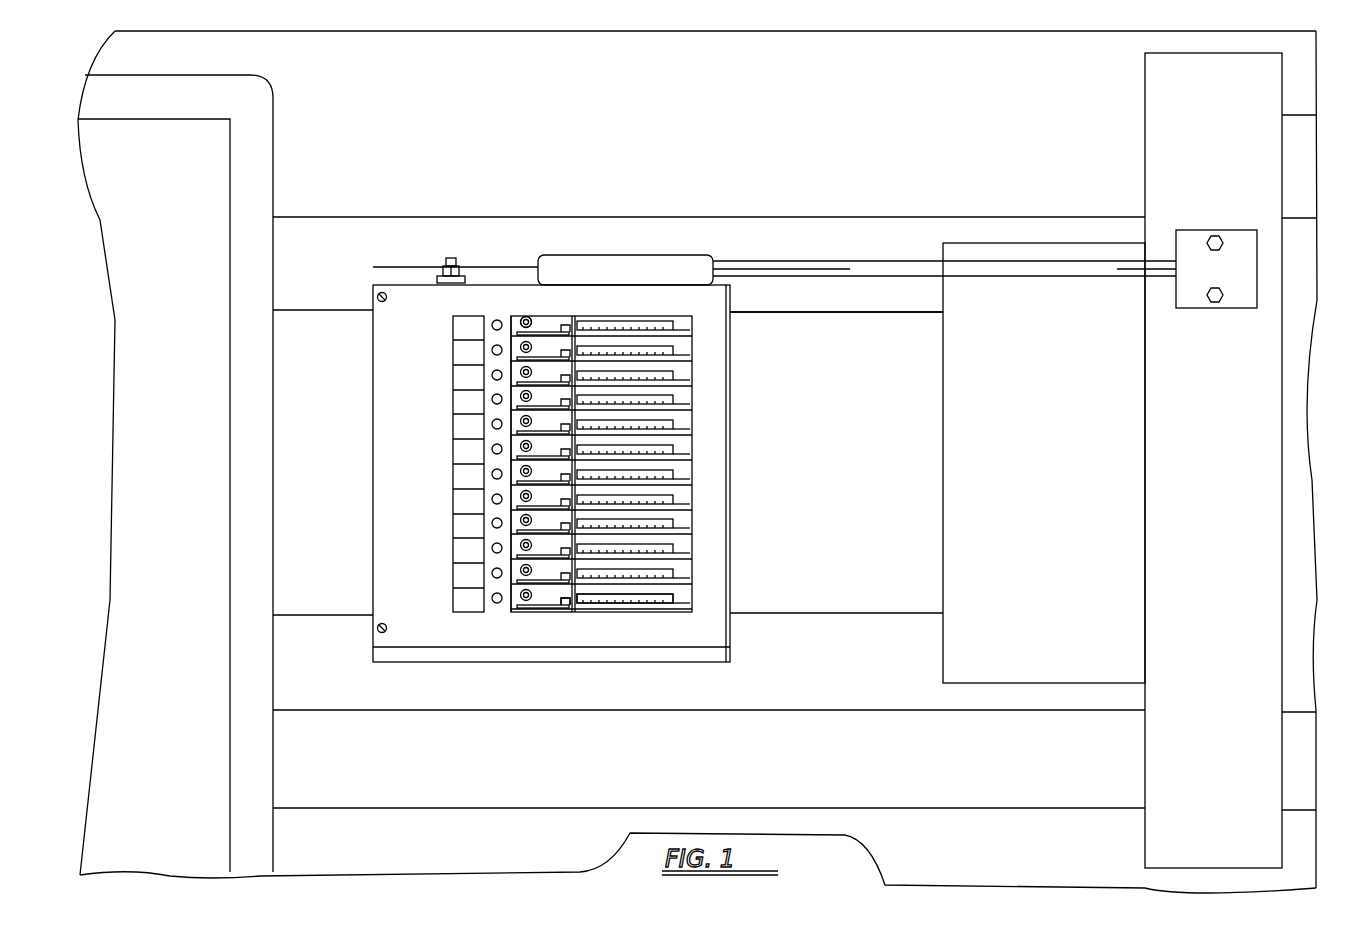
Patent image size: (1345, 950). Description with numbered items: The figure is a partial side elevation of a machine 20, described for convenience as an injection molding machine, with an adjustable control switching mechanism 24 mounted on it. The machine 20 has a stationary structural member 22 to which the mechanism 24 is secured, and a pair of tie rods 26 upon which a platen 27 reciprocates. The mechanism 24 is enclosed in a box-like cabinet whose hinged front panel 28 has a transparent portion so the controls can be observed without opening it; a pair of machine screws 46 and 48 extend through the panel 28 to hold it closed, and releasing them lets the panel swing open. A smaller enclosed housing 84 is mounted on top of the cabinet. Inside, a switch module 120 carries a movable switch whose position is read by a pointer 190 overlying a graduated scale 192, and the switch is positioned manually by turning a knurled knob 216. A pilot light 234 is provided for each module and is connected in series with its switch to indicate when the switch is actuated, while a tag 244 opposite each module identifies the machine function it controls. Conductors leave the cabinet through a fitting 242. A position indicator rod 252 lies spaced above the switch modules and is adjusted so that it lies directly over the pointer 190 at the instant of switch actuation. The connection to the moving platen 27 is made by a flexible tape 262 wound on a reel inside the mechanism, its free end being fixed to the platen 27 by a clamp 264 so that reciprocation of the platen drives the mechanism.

The machine 20 is at (1306, 428).
The structural member 22 is at (971, 463).
The adjustable control switching mechanism 24 is at (381, 455).
The tie rods 26 is at (970, 128).
The platen 27 is at (1213, 460).
The front panel 28 is at (713, 538).
The machine screw 46 is at (378, 297).
The machine screw 48 is at (378, 630).
The housing 84 is at (625, 270).
The switch module 120 is at (700, 323).
The pointer 190 is at (670, 598).
The graduated scale 192 is at (658, 325).
The knurled knob 216 is at (530, 318).
The pilot light 234 is at (496, 320).
The fitting 242 is at (458, 259).
The tag 244 is at (462, 373).
The position indicator rod 252 is at (568, 588).
The flexible tape 262 is at (838, 273).
The clamp 264 is at (1205, 306).